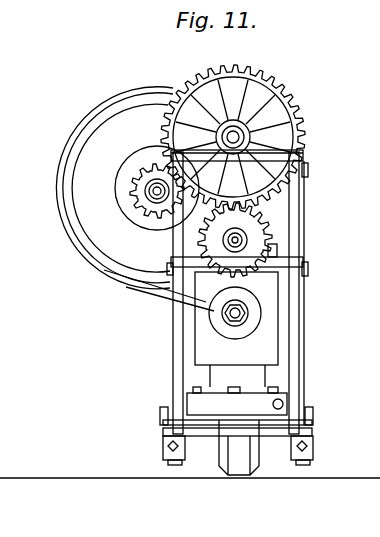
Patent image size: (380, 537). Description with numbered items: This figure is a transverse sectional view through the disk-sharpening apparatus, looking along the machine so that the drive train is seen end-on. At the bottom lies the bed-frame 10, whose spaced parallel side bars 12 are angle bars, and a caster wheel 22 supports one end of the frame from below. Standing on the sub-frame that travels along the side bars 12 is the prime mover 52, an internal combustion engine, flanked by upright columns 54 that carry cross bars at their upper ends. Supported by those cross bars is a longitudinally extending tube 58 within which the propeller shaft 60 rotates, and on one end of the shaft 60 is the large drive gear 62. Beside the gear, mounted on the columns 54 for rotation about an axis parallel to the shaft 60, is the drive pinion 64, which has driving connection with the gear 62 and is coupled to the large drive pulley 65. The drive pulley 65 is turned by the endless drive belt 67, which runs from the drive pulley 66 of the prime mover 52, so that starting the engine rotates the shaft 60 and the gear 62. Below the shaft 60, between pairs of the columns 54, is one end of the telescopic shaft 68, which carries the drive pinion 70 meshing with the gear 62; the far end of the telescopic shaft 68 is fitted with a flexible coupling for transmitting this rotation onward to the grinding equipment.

The bed-frame 10 is at (325, 435).
The side bars 12 is at (313, 418).
The caster wheel 22 is at (246, 466).
The prime mover 52 is at (201, 345).
The columns 54 is at (298, 302).
The tube 58 is at (250, 130).
The propeller shaft 60 is at (251, 134).
The drive gear 62 is at (300, 110).
The drive pinion 64 is at (146, 181).
The drive pulley 65 is at (70, 187).
The drive pulley of the prime mover 66 is at (250, 322).
The endless drive belt 67 is at (147, 298).
The telescopic shaft 68 is at (248, 241).
The drive pinion 70 is at (250, 226).